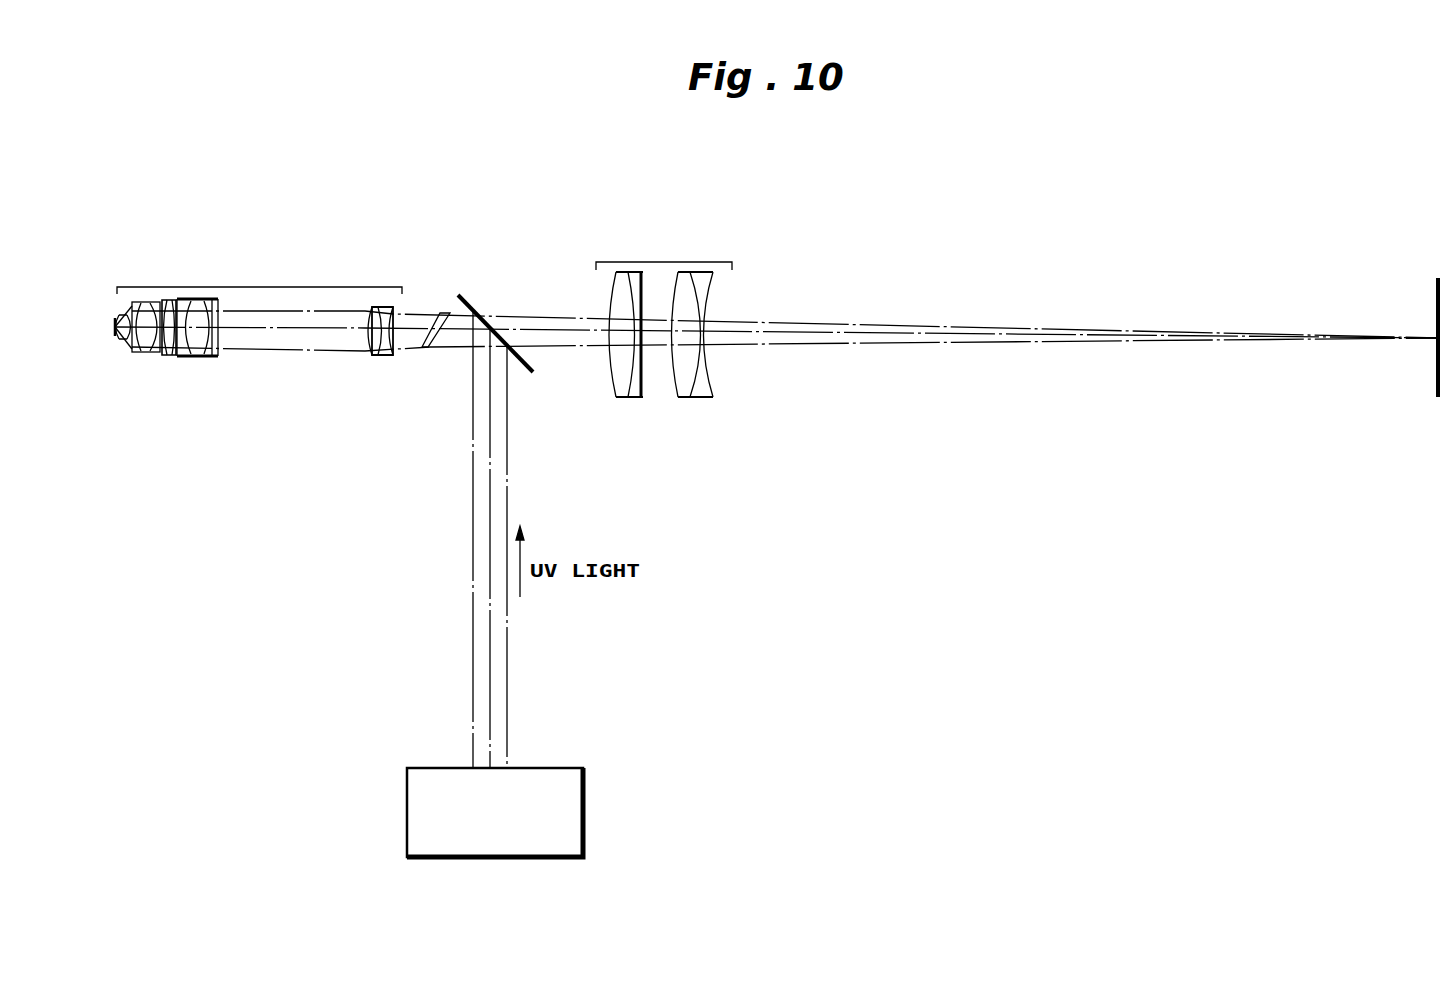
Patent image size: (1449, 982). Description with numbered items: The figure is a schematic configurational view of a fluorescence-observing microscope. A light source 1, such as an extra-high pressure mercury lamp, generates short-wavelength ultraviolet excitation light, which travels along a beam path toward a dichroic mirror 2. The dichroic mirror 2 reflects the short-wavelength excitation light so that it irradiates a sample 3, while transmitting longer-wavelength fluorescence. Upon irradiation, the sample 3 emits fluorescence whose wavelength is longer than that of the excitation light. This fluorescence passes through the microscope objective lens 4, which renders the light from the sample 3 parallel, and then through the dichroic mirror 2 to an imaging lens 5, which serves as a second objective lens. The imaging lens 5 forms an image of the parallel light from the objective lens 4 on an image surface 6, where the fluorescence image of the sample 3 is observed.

The light source 1 is at (586, 826).
The dichroic mirror 2 is at (472, 302).
The sample 3 is at (113, 333).
The objective lens 4 is at (246, 287).
The imaging lens 5 is at (666, 262).
The image surface 6 is at (1432, 377).